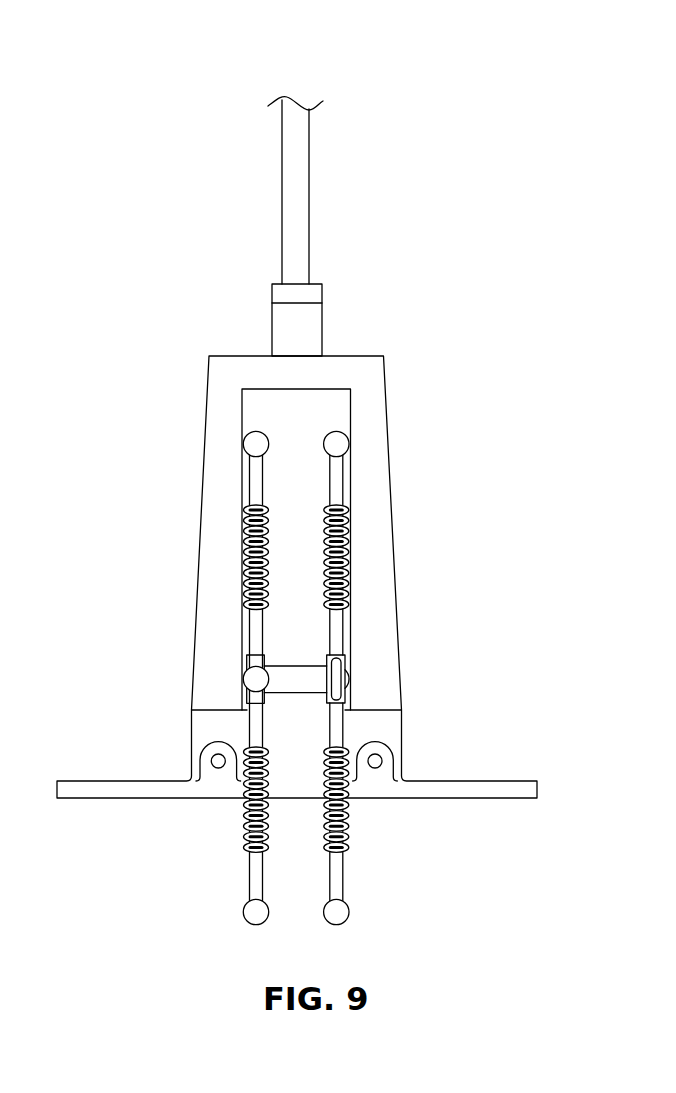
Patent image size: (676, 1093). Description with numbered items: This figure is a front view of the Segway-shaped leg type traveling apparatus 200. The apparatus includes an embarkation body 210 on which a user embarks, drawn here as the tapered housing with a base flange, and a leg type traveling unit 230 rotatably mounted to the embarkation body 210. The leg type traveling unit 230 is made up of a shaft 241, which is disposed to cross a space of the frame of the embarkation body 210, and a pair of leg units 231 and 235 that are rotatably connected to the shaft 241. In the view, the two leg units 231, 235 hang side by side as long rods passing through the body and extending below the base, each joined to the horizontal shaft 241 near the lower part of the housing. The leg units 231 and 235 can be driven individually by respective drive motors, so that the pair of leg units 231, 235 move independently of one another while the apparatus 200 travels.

The Segway-shaped leg type traveling apparatus 200 is at (327, 41).
The embarkation body 210 is at (180, 513).
The leg type traveling unit 230 is at (537, 497).
The leg unit 231 is at (277, 613).
The leg unit 235 is at (351, 631).
The shaft 241 is at (310, 680).